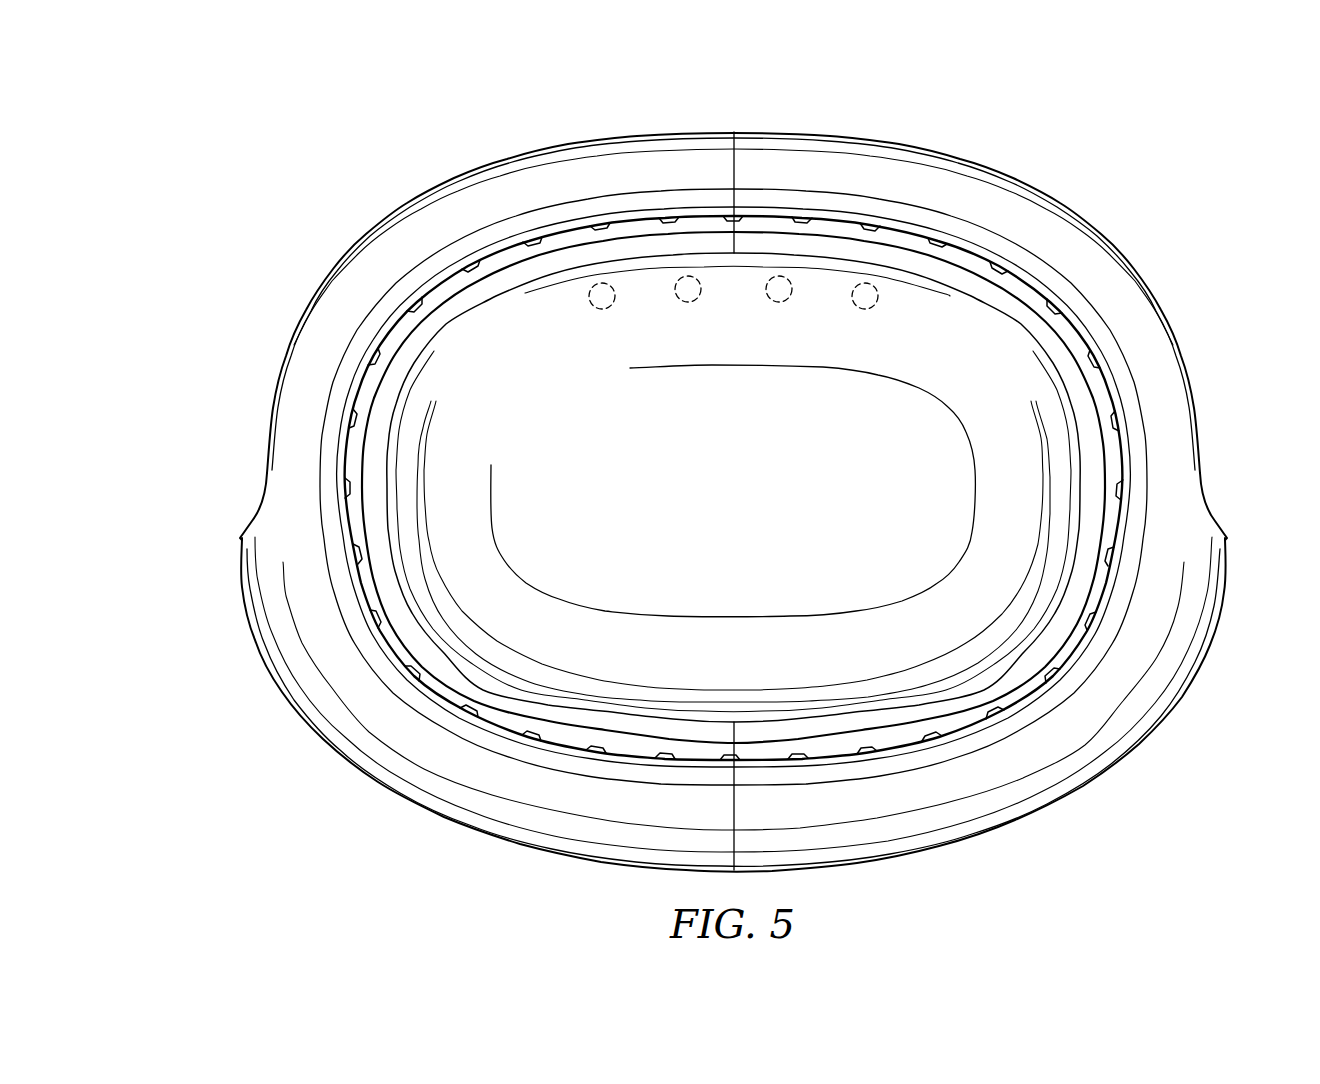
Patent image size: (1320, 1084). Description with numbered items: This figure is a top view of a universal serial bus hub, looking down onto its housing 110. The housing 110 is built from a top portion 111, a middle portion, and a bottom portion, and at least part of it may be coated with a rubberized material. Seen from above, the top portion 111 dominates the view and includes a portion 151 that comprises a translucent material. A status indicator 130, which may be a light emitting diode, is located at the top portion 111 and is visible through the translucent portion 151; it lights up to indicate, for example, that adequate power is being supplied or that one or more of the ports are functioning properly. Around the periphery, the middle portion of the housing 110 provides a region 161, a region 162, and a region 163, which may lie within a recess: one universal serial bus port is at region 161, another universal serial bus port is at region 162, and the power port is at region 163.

The housing 110 is at (1058, 184).
The top portion 111 is at (487, 210).
The status indicator 130 is at (615, 296).
The portion 151 is at (752, 485).
The region 161 is at (1220, 486).
The region 162 is at (823, 124).
The region 163 is at (244, 472).